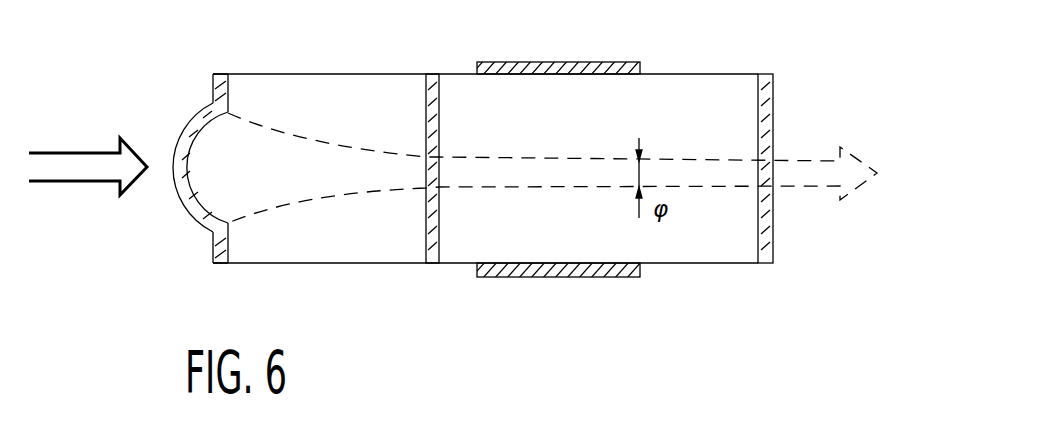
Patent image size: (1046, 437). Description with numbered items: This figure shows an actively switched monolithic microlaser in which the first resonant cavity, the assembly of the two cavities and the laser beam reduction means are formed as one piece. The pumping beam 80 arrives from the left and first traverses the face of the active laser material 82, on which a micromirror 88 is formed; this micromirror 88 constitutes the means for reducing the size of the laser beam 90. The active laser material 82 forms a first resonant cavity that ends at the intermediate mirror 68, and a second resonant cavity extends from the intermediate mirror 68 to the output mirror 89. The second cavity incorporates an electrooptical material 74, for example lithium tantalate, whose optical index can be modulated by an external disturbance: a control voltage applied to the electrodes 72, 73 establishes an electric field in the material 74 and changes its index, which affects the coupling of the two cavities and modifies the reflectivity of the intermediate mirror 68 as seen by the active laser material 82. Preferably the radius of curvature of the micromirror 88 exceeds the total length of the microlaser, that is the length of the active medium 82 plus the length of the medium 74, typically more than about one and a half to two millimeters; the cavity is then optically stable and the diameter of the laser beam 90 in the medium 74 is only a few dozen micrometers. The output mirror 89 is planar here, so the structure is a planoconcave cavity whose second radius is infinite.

The intermediate mirror 68 is at (436, 256).
The electrode 72 is at (602, 278).
The electrode 73 is at (523, 63).
The electrooptical material 74 is at (653, 85).
The pumping beam 80 is at (85, 182).
The active laser material 82 is at (318, 78).
The micromirror 88 is at (189, 208).
The output mirror 89 is at (768, 90).
The laser beam 90 is at (280, 203).